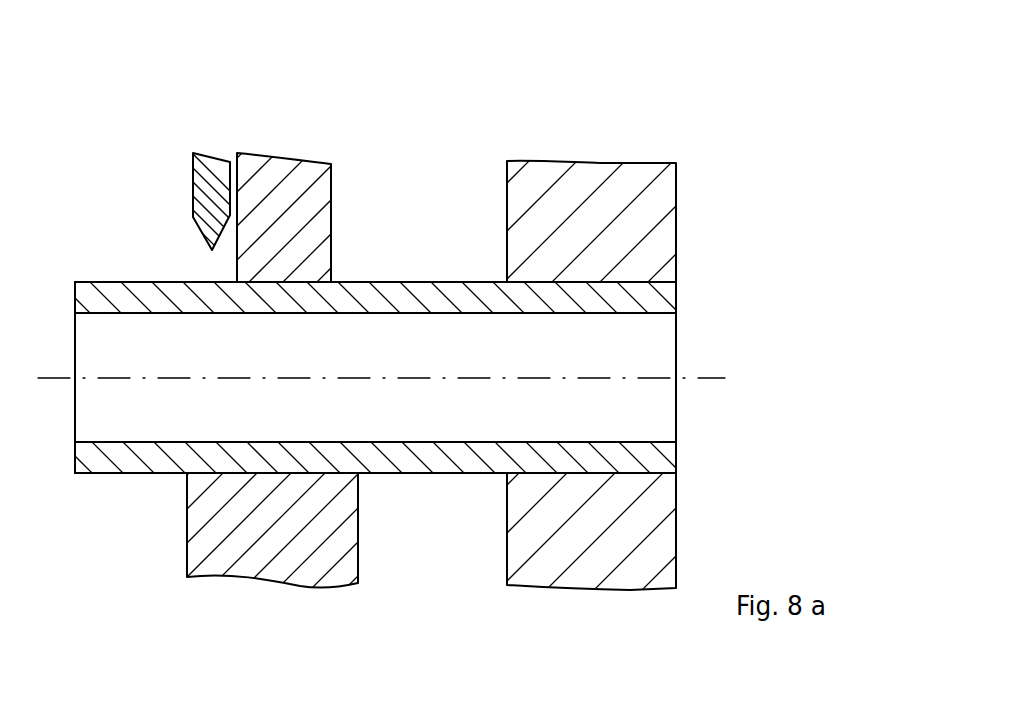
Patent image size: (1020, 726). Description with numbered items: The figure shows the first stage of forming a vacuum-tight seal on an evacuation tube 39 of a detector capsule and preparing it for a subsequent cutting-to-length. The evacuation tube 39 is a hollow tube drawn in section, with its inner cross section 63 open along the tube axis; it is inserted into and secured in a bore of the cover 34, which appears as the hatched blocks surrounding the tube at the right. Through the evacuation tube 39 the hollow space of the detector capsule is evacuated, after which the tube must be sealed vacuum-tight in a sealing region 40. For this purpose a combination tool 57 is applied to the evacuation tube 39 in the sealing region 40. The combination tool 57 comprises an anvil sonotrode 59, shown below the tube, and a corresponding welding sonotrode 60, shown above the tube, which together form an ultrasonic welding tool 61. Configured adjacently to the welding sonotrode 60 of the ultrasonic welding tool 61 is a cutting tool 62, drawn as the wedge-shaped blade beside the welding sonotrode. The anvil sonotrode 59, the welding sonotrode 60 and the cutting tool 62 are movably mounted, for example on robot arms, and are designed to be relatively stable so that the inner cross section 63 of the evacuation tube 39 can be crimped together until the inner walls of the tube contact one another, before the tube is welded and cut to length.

The cover 34 is at (660, 207).
The evacuation tube 39 is at (138, 290).
The sealing region 40 is at (333, 258).
The combination tool 57 is at (233, 138).
The anvil sonotrode 59 is at (198, 522).
The welding sonotrode 60 is at (331, 165).
The ultrasonic welding tool 61 is at (373, 540).
The cutting tool 62 is at (195, 192).
The inner cross section 63 is at (387, 362).